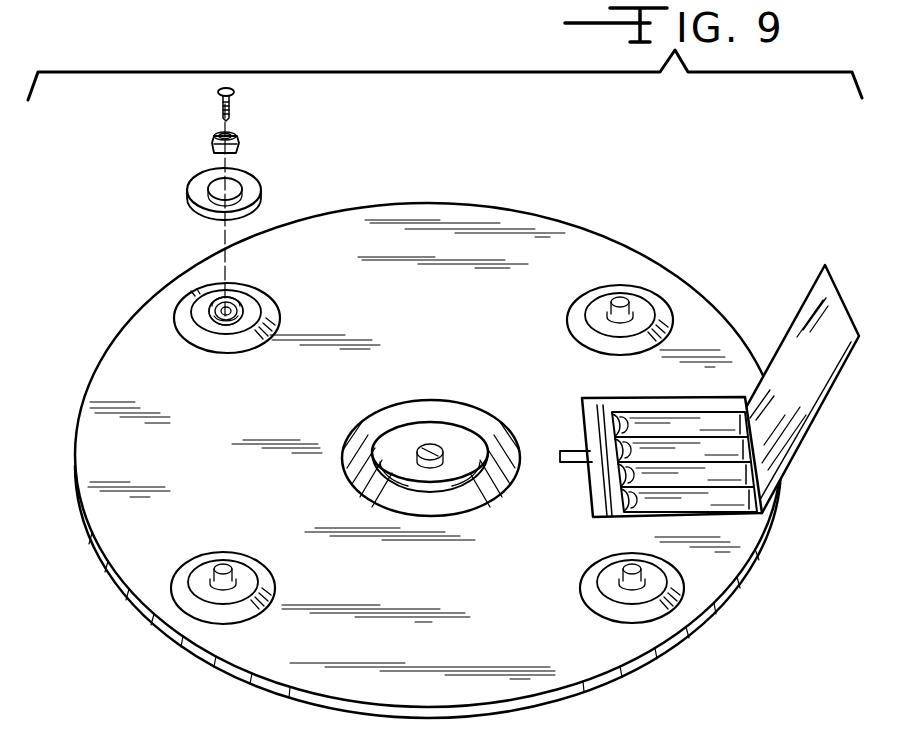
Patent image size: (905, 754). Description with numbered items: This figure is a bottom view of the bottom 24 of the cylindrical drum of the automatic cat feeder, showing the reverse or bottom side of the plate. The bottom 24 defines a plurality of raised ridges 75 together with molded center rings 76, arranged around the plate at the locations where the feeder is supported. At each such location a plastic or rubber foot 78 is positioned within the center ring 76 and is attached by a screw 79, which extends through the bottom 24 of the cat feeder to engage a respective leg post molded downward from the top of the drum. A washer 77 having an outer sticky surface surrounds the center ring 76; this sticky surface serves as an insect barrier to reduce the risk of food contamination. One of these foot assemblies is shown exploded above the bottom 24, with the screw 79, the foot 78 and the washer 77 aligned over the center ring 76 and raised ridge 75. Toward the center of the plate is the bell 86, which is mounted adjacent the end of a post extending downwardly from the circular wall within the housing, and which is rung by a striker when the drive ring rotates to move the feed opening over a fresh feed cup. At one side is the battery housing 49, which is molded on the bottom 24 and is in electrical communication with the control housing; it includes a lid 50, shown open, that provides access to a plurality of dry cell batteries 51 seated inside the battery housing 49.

The bottom 24 is at (448, 336).
The battery housing 49 is at (600, 487).
The lid 50 is at (817, 383).
The dry cell batteries 51 is at (698, 436).
The raised ridges 75 is at (198, 351).
The center ring 76 is at (240, 314).
The washer 77 is at (262, 187).
The foot 78 is at (240, 146).
The screw 79 is at (234, 102).
The bell 86 is at (432, 422).